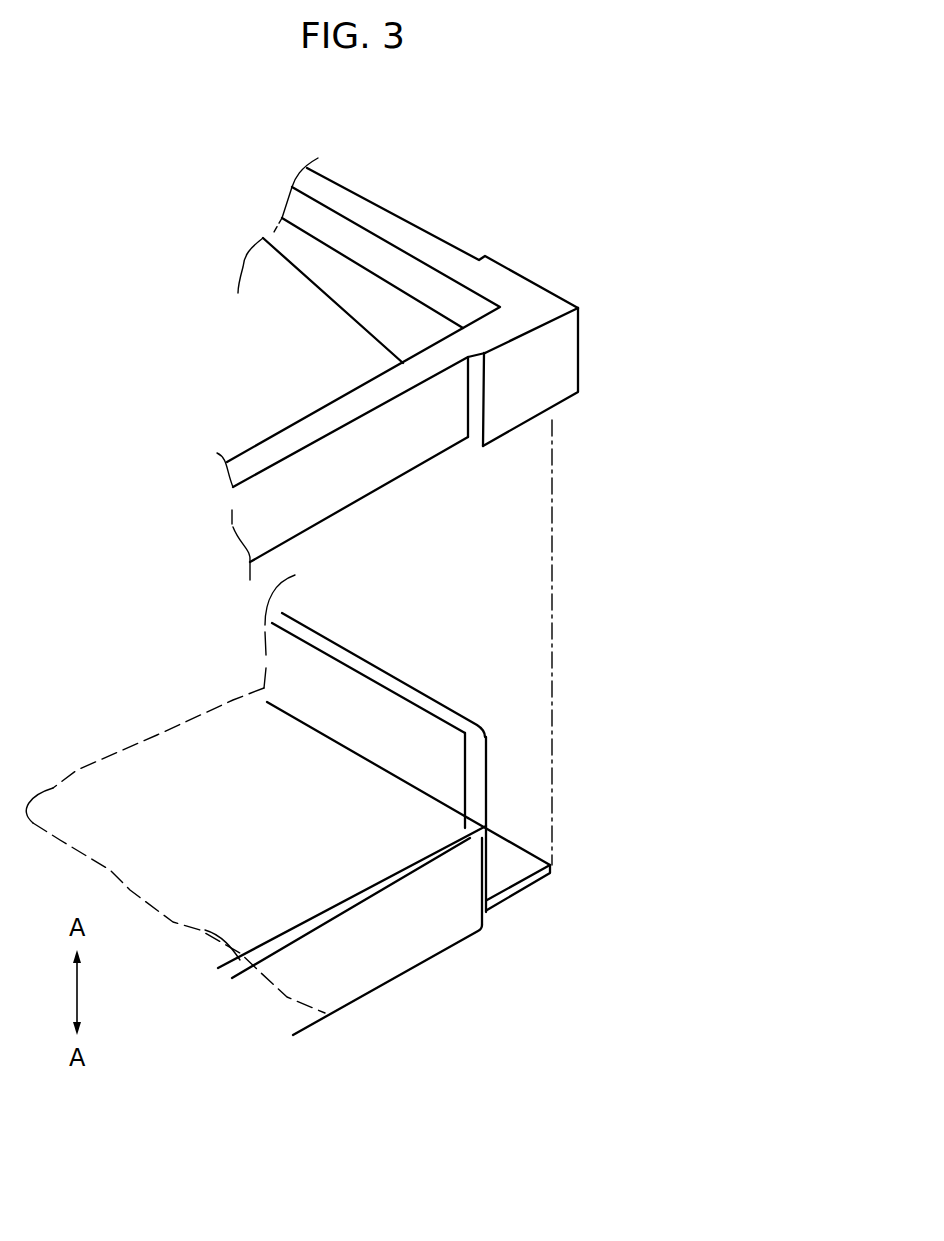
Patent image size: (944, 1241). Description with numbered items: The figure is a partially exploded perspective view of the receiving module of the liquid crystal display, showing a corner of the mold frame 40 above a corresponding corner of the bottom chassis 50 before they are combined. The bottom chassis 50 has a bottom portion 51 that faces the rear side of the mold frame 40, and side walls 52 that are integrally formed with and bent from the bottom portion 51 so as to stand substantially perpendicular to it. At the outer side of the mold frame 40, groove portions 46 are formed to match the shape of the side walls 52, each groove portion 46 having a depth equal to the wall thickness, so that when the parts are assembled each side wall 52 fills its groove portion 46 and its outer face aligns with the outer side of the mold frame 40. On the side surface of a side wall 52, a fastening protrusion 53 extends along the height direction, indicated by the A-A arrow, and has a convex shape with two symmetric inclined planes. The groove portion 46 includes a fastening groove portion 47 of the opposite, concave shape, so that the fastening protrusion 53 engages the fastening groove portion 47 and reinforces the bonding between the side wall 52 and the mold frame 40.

The mold frame 40 is at (438, 369).
The groove portion 46 is at (398, 218).
The fastening groove portion 47 is at (490, 258).
The bottom chassis 50 is at (333, 805).
The bottom portion 51 is at (525, 870).
The side wall 52 is at (278, 667).
The fastening protrusion 53 is at (475, 725).